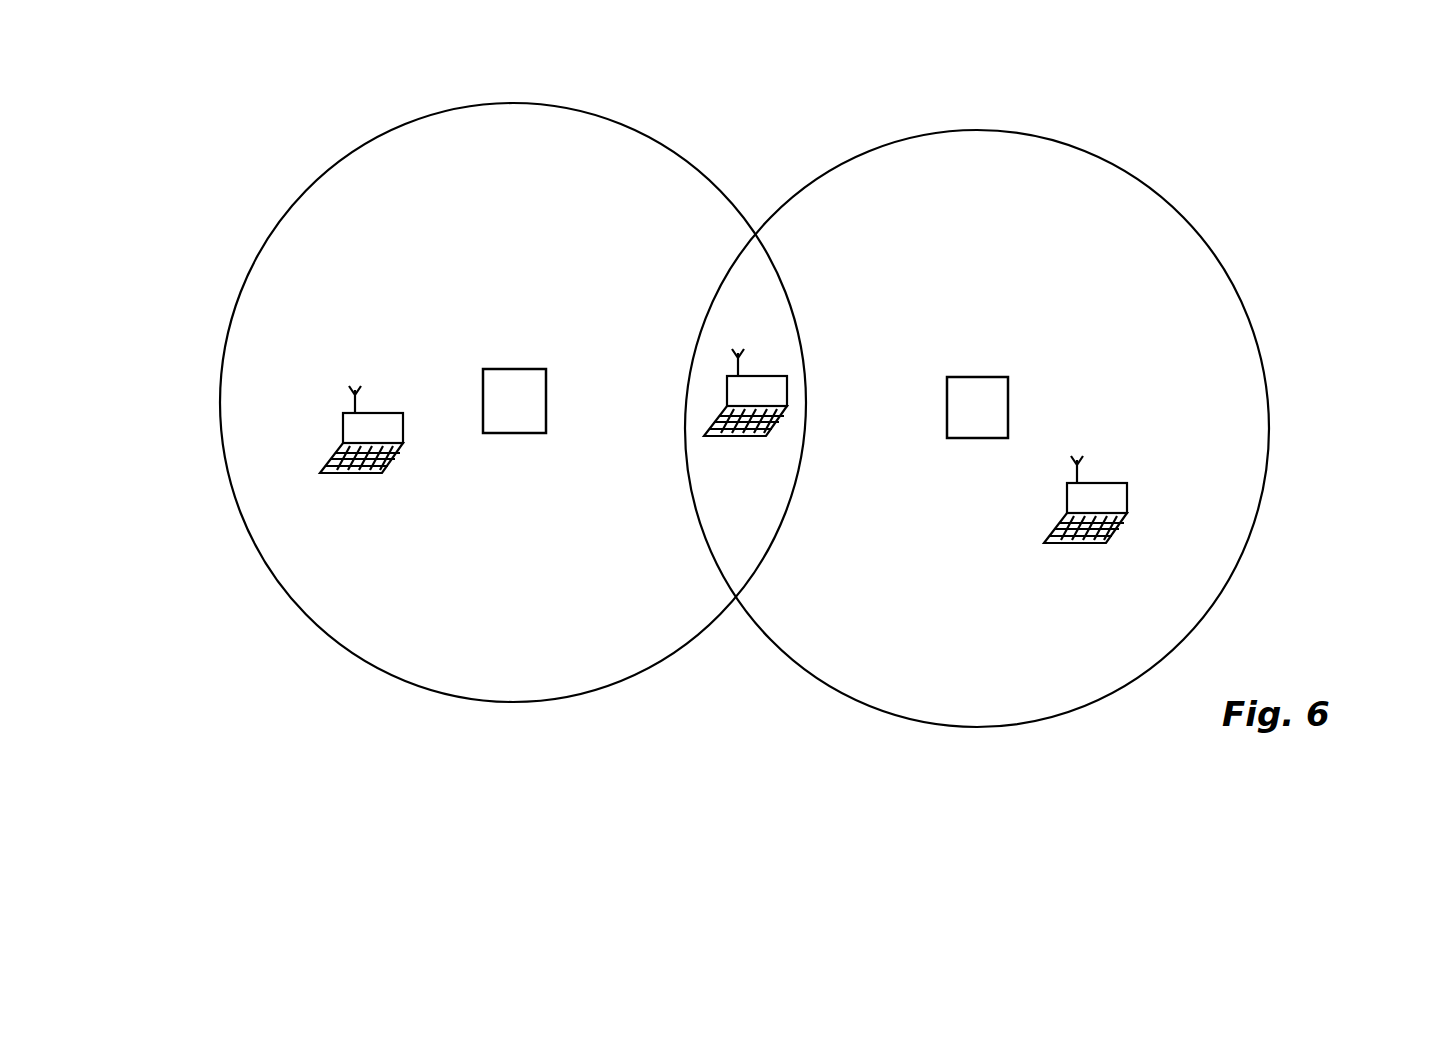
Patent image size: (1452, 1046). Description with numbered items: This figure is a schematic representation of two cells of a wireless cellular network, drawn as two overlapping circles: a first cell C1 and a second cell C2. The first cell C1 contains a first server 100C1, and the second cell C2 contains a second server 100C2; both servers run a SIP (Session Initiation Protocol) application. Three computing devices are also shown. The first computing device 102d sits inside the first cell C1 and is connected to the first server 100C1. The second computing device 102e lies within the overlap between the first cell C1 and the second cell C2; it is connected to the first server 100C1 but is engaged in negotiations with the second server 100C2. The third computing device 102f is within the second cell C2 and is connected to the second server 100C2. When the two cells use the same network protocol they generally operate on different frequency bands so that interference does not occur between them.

The first cell C1 is at (555, 103).
The second cell C2 is at (1203, 233).
The first server 100C1 is at (526, 433).
The second server 100C2 is at (1003, 378).
The first computing device 102d is at (327, 453).
The second computing device 102e is at (750, 376).
The third computing device 102f is at (1127, 487).